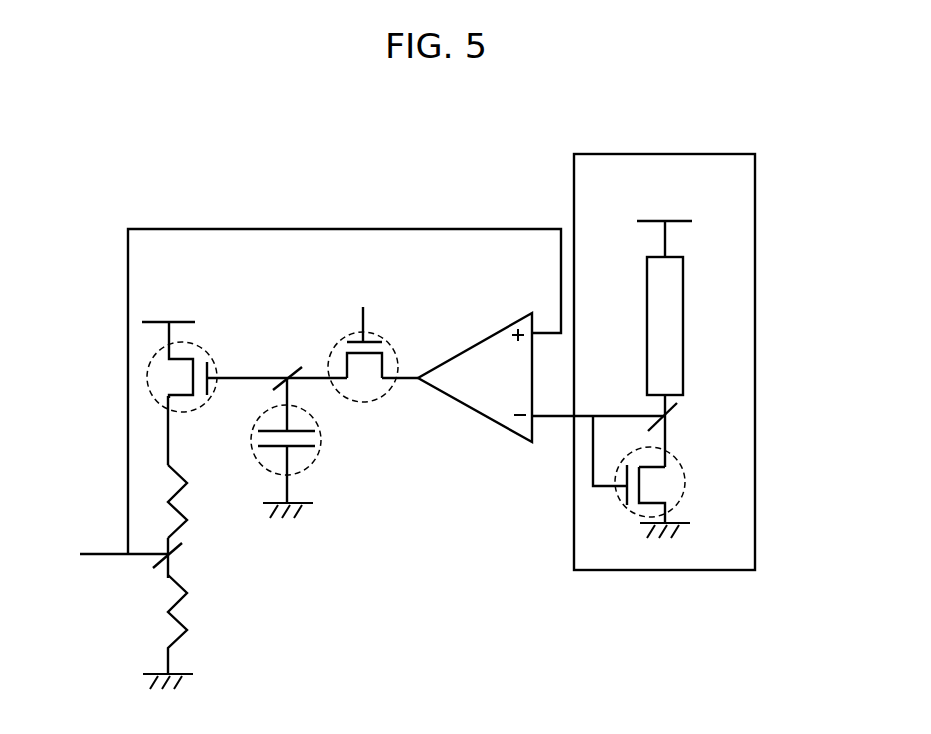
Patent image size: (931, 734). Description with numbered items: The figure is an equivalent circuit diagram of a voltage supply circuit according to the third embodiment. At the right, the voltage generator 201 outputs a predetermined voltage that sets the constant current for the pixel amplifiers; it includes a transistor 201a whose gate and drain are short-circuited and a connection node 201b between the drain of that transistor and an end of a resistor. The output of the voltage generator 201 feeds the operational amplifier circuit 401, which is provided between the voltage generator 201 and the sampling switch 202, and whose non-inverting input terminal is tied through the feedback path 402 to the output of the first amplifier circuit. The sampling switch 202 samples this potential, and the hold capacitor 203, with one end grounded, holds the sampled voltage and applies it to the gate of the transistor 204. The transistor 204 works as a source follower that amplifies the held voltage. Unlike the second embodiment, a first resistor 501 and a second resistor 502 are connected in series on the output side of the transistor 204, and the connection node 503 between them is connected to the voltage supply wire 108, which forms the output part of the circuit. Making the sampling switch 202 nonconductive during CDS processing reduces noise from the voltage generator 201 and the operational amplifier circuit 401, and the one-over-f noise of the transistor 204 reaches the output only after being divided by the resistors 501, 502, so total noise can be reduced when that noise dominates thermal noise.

The voltage supply wire 108 is at (98, 554).
The voltage generator 201 is at (755, 224).
The transistor 201a is at (685, 475).
The connection node 201b is at (678, 403).
The sampling switch 202 is at (330, 347).
The hold capacitor 203 is at (320, 447).
The transistor 204 is at (202, 347).
The operational amplifier circuit 401 is at (455, 347).
The feedback path 402 is at (272, 229).
The first resistor 501 is at (167, 648).
The second resistor 502 is at (180, 507).
The connection node 503 is at (175, 545).